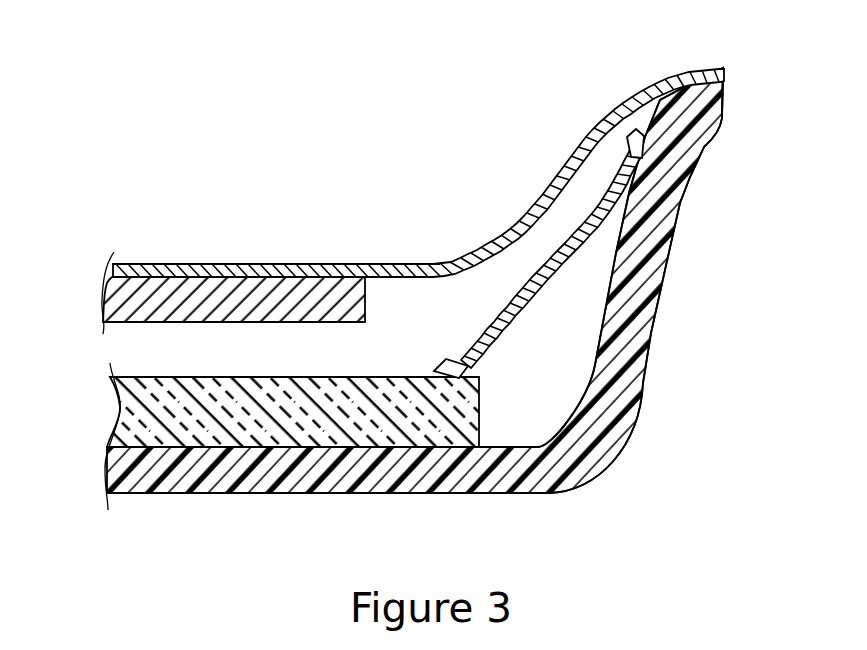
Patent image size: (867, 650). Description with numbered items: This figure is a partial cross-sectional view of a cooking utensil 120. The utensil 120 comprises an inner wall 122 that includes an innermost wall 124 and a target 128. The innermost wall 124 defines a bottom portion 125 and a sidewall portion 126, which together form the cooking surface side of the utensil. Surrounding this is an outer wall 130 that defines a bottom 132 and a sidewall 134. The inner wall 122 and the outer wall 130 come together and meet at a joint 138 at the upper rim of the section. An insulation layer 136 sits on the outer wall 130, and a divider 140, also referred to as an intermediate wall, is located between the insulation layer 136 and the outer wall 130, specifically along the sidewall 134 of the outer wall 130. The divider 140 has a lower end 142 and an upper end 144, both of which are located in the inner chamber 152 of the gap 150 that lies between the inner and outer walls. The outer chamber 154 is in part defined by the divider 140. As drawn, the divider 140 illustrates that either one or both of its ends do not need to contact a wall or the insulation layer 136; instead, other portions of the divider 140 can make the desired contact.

The utensil 120 is at (178, 232).
The inner wall 122 is at (333, 238).
The innermost wall 124 is at (400, 240).
The bottom portion 125 is at (221, 264).
The sidewall portion 126 is at (612, 103).
The target 128 is at (128, 276).
The outer wall 130 is at (517, 530).
The bottom 132 is at (220, 481).
The sidewall 134 is at (676, 207).
The insulation layer 136 is at (117, 408).
The joint 138 is at (726, 67).
The divider 140 is at (538, 294).
The lower end 142 is at (438, 358).
The upper end 144 is at (640, 128).
The gap 150 is at (578, 173).
The inner chamber 152 is at (145, 352).
The outer chamber 154 is at (542, 403).